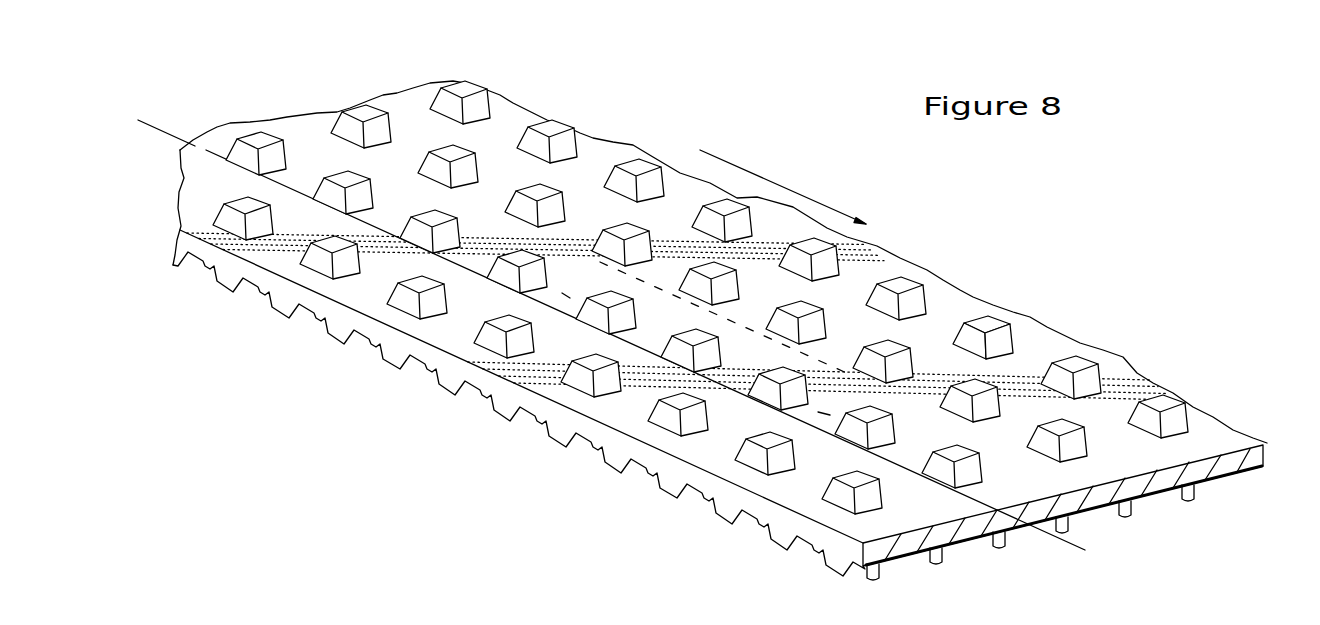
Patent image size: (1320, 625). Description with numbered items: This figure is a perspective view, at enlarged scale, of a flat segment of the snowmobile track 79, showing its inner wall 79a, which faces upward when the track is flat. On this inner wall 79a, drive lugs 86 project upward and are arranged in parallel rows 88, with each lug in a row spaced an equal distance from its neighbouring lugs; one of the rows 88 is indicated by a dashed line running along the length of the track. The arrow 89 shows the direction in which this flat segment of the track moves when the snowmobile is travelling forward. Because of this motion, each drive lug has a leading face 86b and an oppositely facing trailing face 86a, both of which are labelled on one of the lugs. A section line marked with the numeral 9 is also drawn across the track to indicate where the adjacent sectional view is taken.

The section line 9- 9 is at (138, 120).
The track 79 is at (677, 470).
The inner wall 79a is at (547, 377).
The drive lugs 86 is at (407, 300).
The trailing face 86a is at (957, 337).
The leading face 86b is at (1000, 343).
The parallel rows 88 is at (655, 288).
The arrow 89 is at (716, 158).